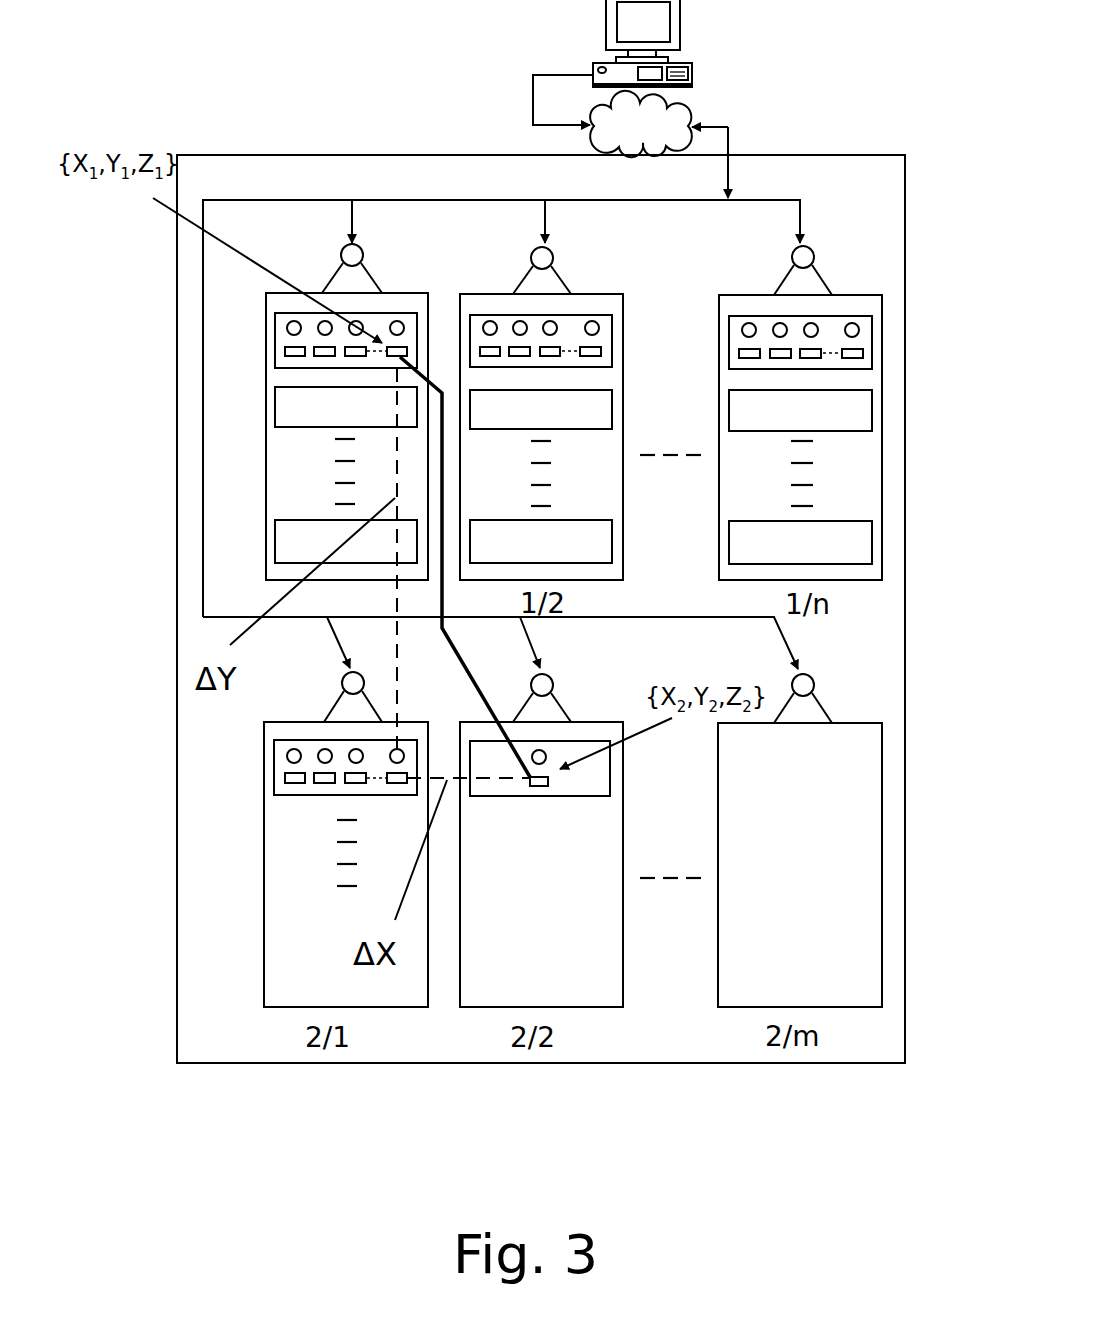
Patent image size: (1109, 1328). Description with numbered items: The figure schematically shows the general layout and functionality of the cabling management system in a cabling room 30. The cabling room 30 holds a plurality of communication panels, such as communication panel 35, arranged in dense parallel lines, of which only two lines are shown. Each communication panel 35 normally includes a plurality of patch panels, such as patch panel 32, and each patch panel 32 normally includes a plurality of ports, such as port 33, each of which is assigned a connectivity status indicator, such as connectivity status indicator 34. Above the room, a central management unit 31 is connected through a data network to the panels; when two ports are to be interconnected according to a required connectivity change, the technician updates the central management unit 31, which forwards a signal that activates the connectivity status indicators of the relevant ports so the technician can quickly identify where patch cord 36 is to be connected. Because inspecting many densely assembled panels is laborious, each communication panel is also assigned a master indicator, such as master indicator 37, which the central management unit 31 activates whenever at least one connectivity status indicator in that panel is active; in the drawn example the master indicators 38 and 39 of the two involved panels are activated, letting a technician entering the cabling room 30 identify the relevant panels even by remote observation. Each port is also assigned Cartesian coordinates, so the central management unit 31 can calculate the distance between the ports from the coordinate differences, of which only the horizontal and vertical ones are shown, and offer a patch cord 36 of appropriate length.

The cabling room 30 is at (470, 1067).
The central management unit 31 is at (670, 8).
The patch panel 32 is at (277, 348).
The port 33 is at (288, 357).
The connectivity status indicator 34 is at (288, 322).
The communication panel 35 is at (271, 422).
The patch cord 36 is at (472, 692).
The master indicator 37 is at (554, 253).
The master indicator 38 is at (340, 251).
The master indicator 39 is at (552, 676).